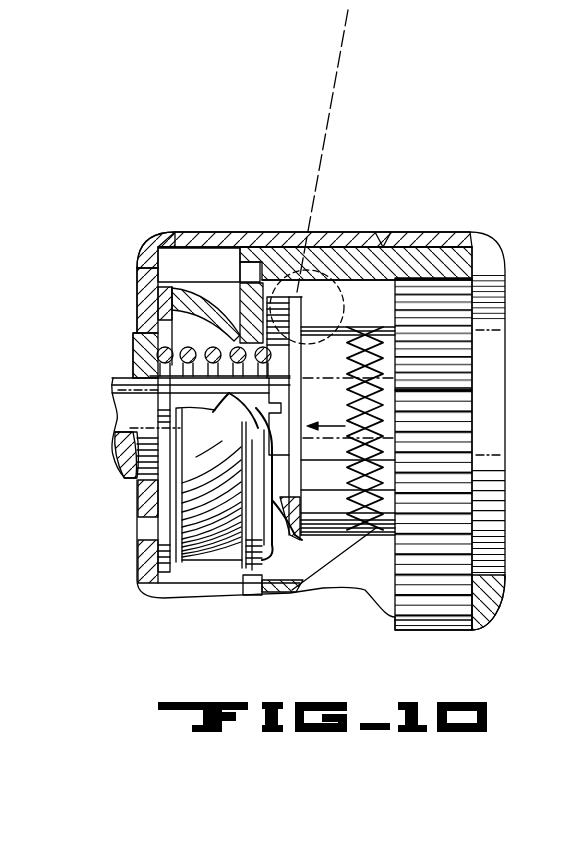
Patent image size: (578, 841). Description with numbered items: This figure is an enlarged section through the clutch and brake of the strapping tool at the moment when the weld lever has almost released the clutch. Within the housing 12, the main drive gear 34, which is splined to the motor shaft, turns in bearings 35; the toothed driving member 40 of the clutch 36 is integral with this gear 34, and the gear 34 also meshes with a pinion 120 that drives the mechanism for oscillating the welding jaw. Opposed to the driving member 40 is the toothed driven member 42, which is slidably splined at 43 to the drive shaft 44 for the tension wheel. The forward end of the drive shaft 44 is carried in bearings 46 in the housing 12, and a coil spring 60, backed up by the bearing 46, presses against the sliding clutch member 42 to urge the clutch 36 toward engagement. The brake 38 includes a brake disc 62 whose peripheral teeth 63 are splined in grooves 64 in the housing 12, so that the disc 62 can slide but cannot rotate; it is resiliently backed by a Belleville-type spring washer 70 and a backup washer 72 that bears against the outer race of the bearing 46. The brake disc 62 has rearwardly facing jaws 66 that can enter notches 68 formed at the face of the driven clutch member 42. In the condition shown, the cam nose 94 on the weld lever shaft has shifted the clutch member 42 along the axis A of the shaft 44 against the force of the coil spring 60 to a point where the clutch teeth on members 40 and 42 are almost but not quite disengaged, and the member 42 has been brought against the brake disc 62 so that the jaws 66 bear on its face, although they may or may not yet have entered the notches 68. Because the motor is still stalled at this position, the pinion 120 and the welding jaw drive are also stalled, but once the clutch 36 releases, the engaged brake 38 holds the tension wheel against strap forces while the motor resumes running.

The axis A is at (346, 27).
The housing 12 is at (470, 238).
The main drive gear 34 is at (467, 310).
The bearings 35 is at (488, 339).
The clutch 36 is at (388, 422).
The brake 38 is at (262, 262).
The toothed driving member 40 is at (388, 527).
The toothed driven member 42 is at (311, 523).
The slidable spline 43 is at (211, 487).
The drive shaft 44 is at (115, 406).
The bearings 46 is at (137, 296).
The coil spring 60 is at (158, 362).
The brake disc 62 is at (246, 566).
The peripheral teeth 63 is at (248, 262).
The grooves 64 is at (182, 253).
The jaws 66 is at (265, 536).
The notches 68 is at (243, 428).
The Belleville-type spring washer 70 is at (212, 292).
The backup washer 72 is at (158, 317).
The cam nose 94 is at (340, 292).
The pinion 120 is at (472, 621).